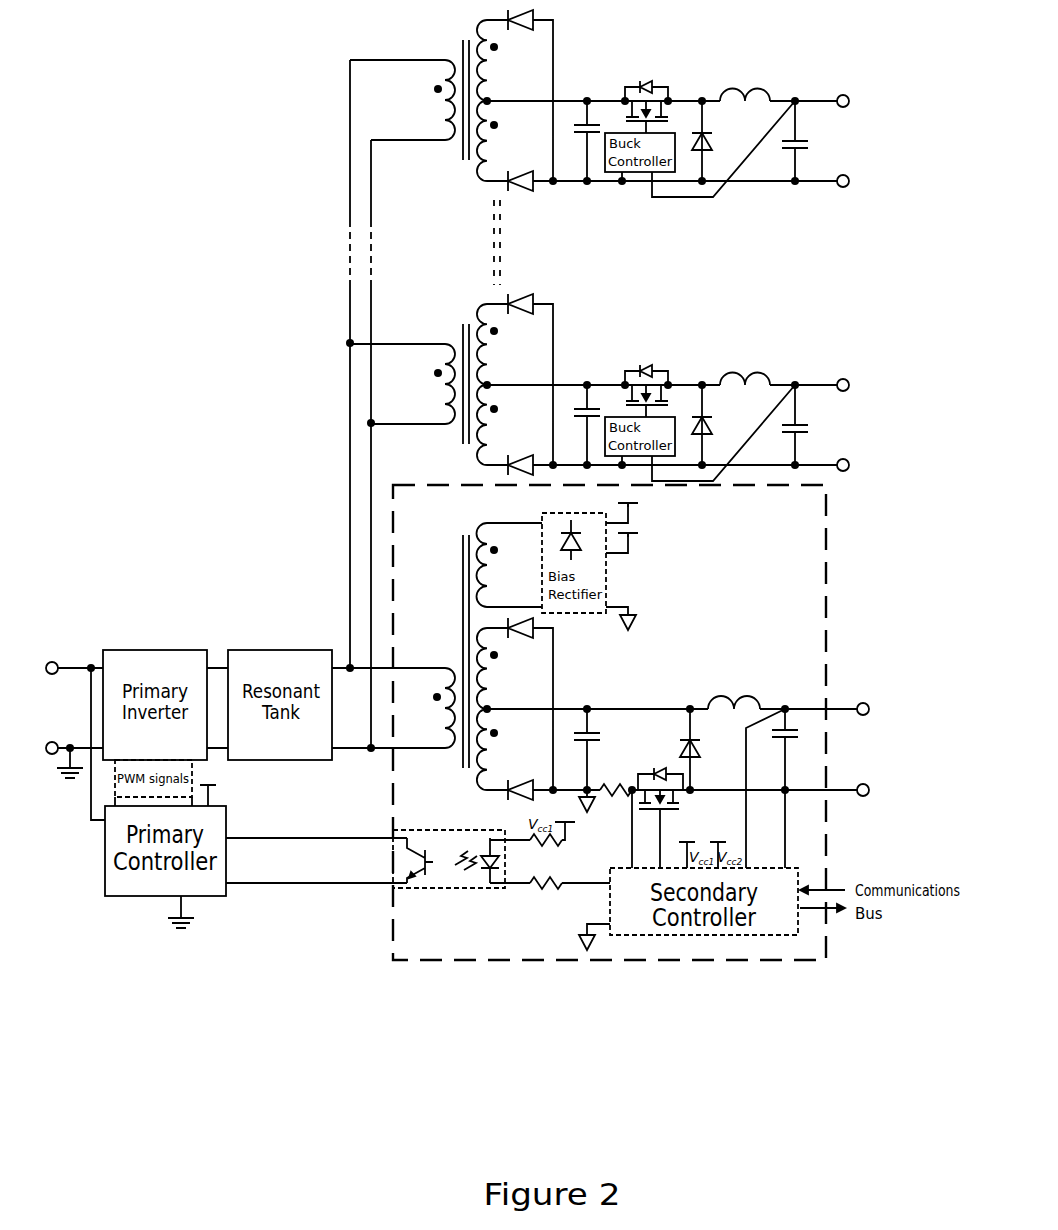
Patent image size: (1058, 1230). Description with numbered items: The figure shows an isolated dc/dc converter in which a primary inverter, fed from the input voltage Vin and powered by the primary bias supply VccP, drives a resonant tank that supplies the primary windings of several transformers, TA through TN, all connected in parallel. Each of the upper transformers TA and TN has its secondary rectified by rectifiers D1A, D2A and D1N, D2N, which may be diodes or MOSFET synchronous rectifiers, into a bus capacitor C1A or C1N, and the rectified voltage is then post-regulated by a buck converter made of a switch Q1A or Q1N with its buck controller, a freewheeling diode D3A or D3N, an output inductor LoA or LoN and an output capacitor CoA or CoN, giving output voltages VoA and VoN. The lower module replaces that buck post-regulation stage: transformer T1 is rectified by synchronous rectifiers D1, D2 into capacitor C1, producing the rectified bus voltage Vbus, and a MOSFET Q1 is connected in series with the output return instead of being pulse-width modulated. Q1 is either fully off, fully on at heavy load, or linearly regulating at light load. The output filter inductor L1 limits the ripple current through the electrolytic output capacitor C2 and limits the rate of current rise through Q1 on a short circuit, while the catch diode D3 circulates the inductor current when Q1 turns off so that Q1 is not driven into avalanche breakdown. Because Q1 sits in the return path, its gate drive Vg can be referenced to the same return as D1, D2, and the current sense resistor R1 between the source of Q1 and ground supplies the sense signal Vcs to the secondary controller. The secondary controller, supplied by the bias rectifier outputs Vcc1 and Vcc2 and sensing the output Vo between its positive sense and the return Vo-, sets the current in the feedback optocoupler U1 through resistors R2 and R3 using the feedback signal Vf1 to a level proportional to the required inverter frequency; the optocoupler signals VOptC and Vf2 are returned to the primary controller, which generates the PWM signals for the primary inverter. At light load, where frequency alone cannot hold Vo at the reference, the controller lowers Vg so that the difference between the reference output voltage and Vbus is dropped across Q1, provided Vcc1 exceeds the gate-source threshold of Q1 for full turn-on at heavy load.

The transformer T_N TN is at (465, 100).
The secondary rectifier D_1N D1N is at (520, 35).
The secondary rectifier D_2N D2N is at (517, 167).
The bus capacitor C1N is at (578, 141).
The buck switch Q1N is at (645, 94).
The freewheeling diode D3N is at (717, 141).
The output inductor LoN is at (745, 84).
The output capacitor CoN is at (805, 141).
The output voltage N VoN is at (843, 141).
The transformer T_A TA is at (465, 384).
The secondary rectifier D_1A D1A is at (520, 319).
The secondary rectifier D_2A D2A is at (517, 451).
The bus capacitor C1A is at (578, 425).
The buck switch Q1A is at (645, 378).
The freewheeling diode D3A is at (717, 425).
The output inductor LoA is at (745, 368).
The output capacitor CoA is at (805, 425).
The output voltage A VoA is at (843, 425).
The main transformer T1 is at (465, 656).
The synchronous rectifier D_1 D1 is at (520, 644).
The synchronous rectifier D_2 D2 is at (519, 774).
The bus capacitor C1 is at (593, 749).
The rectified output of the resonant converter V_bus Vbus is at (575, 761).
The current sense resistor R_1 R1 is at (616, 806).
The MOSFET Q_1 Q1 is at (670, 796).
The catch diode D_3 D3 is at (704, 749).
The output filter inductor L_1 L1 is at (734, 691).
The output capacitor C_2 C2 is at (776, 749).
The output voltage V_o Vo is at (867, 749).
The supply voltage V_cc1 Vcc1 is at (649, 506).
The bias voltage 2 Vcc2 is at (649, 549).
The current sense input Vcs is at (644, 858).
The gate voltage V_g Vg is at (672, 858).
The output sense negative Vo- is at (796, 858).
The feedback optocoupler U_1 U1 is at (449, 846).
The resistor R2 is at (532, 846).
The resistor R3 is at (550, 896).
The feedback signal V_f1 Vf1 is at (595, 902).
The input voltage Vin is at (71, 720).
The primary bias voltage VccP is at (222, 794).
The optocoupler collector signal VOptC is at (316, 827).
The feedback voltage 2 Vf2 is at (316, 898).